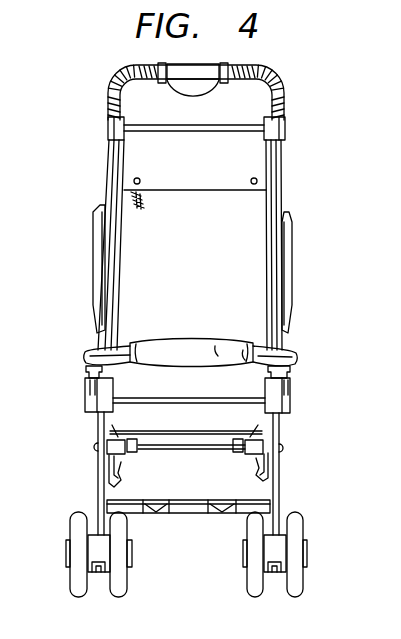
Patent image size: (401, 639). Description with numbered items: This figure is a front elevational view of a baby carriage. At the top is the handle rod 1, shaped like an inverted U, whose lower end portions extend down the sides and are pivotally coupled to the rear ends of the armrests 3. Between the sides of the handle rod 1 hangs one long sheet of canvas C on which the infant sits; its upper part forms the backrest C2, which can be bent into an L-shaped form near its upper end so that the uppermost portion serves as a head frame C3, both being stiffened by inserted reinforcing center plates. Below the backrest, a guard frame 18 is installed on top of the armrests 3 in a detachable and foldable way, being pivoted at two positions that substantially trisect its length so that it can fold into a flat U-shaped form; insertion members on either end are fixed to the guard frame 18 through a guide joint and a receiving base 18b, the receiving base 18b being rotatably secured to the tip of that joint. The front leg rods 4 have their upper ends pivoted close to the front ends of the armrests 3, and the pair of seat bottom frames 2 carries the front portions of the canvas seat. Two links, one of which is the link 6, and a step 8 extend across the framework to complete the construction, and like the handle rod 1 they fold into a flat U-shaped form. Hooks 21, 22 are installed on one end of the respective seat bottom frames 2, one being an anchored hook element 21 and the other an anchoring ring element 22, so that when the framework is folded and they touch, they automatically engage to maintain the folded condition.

The handle rod 1 is at (250, 72).
The sheet of canvas C is at (232, 217).
The backrest C2 is at (208, 274).
The head frame C3 is at (210, 169).
The guard frame 18 is at (189, 352).
The receiving base 18b is at (297, 366).
The armrest 3 is at (88, 400).
The seat bottom frame 2 is at (268, 441).
The front leg rod 4 is at (97, 472).
The link 6 is at (187, 449).
The anchored hook element 21 is at (118, 482).
The anchoring ring element 22 is at (258, 478).
The step 8 is at (175, 513).